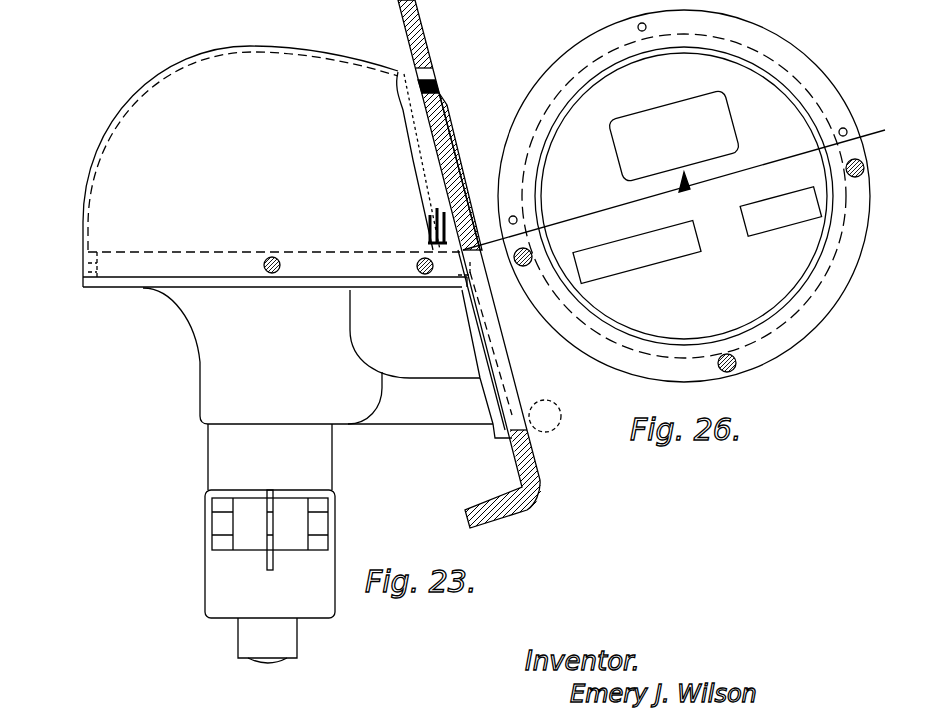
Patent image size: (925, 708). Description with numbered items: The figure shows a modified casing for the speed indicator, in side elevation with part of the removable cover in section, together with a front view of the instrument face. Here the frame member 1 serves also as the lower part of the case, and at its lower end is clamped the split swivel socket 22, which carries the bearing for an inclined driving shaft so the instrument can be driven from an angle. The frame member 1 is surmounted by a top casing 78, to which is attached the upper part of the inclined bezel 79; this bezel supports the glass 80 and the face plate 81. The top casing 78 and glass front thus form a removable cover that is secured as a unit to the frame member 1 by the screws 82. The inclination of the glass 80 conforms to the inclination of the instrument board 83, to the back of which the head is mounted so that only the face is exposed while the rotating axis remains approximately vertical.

In FIG. 23, the frame member 1 is at (327, 376).
In FIG. 23, the split swivel socket 22 is at (205, 583).
In FIG. 23, the top casing 78 is at (275, 166).
In FIG. 23, the inclined bezel 79 is at (437, 86).
In FIG. 26, the inclined bezel 79 is at (805, 68).
In FIG. 23, the glass 80 is at (450, 116).
In FIG. 23, the face plate 81 is at (447, 140).
In FIG. 26, the face plate 81 is at (593, 173).
In FIG. 23, the screws 82 is at (272, 274).
In FIG. 26, the screws 82 is at (733, 370).
In FIG. 23, the instrument board 83 is at (533, 468).